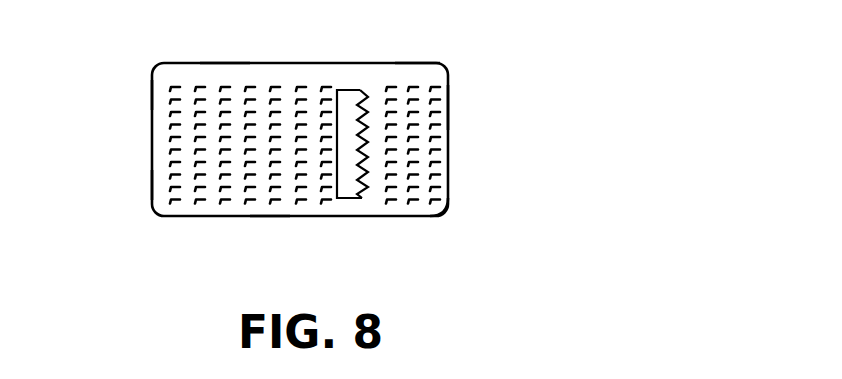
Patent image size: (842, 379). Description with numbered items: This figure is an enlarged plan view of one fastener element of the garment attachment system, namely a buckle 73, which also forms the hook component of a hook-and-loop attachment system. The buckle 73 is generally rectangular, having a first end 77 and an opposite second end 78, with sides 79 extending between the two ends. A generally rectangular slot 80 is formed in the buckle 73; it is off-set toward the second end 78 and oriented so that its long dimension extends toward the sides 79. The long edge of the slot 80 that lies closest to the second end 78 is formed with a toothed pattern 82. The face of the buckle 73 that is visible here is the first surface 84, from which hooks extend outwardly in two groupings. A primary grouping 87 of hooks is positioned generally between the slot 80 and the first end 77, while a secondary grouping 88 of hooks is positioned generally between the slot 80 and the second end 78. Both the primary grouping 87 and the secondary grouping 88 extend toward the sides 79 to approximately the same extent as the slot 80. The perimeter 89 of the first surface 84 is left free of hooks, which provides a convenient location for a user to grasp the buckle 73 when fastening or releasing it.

The buckle 73 is at (152, 67).
The first end 77 is at (153, 183).
The second end 78 is at (448, 105).
The sides 79 is at (222, 63).
The slot 80 is at (344, 112).
The toothed pattern 82 is at (360, 157).
The first surface 84 is at (153, 92).
The primary grouping of hooks 87 is at (228, 201).
The secondary grouping of hooks 88 is at (447, 219).
The perimeter 89 is at (405, 77).